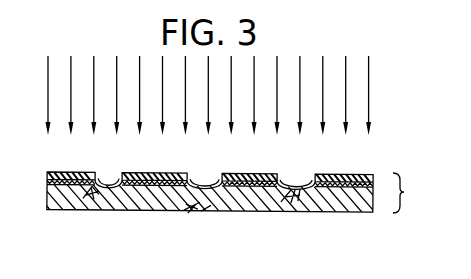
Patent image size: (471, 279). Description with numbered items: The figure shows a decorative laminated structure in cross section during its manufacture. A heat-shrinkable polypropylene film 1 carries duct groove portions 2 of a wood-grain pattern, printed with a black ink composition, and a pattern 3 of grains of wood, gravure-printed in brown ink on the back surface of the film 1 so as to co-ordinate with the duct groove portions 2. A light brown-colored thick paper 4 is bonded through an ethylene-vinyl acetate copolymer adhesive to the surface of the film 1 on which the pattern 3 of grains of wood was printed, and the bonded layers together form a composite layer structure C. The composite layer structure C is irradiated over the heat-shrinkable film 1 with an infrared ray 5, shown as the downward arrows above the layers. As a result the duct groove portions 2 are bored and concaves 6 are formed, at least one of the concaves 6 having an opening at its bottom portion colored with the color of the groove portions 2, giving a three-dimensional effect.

The heat-shrinkable polypropylene film 1 is at (163, 187).
The duct groove portions 2 is at (295, 188).
The pattern of grains of wood 3 is at (341, 190).
The thick paper 4 is at (222, 201).
The infrared ray 5 is at (323, 100).
The concaves 6 is at (295, 178).
The composite layer structure C is at (411, 193).